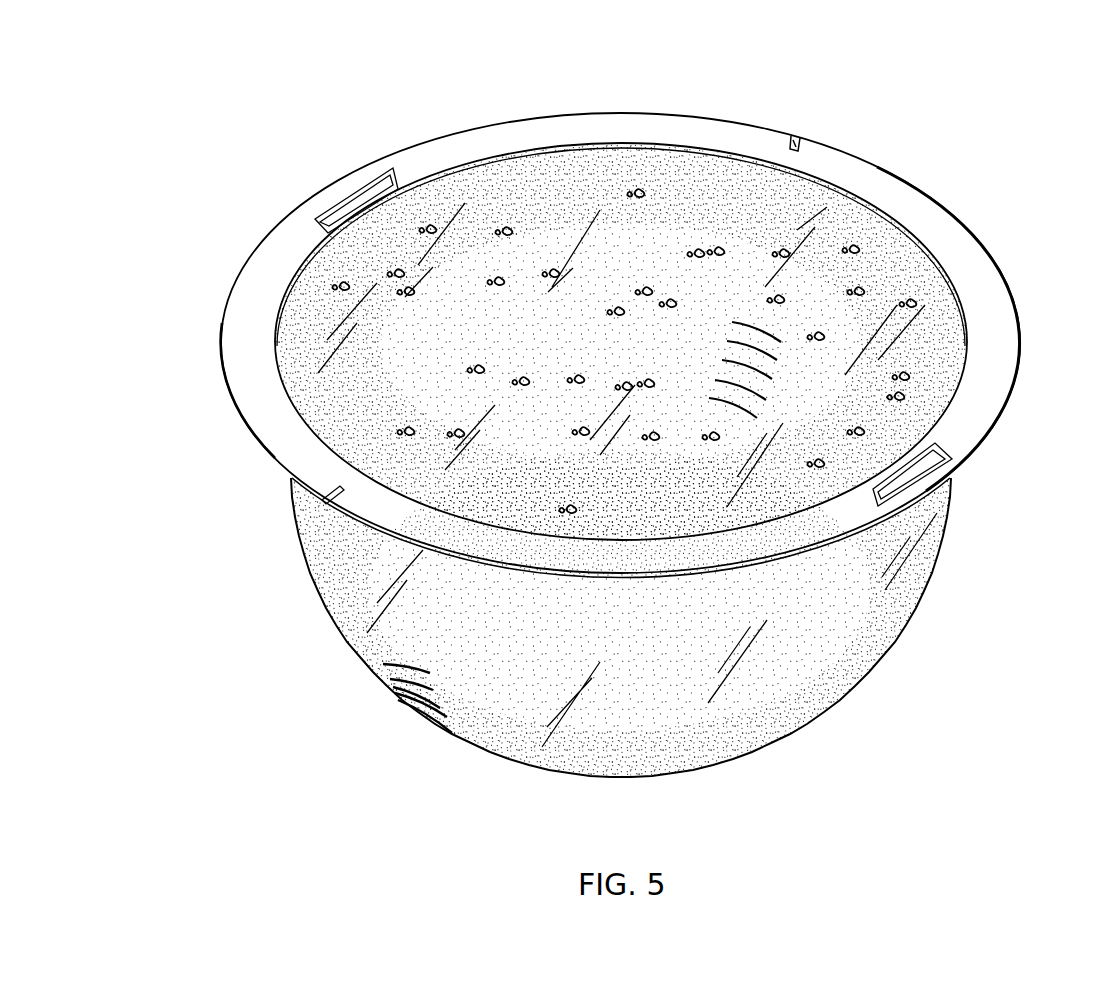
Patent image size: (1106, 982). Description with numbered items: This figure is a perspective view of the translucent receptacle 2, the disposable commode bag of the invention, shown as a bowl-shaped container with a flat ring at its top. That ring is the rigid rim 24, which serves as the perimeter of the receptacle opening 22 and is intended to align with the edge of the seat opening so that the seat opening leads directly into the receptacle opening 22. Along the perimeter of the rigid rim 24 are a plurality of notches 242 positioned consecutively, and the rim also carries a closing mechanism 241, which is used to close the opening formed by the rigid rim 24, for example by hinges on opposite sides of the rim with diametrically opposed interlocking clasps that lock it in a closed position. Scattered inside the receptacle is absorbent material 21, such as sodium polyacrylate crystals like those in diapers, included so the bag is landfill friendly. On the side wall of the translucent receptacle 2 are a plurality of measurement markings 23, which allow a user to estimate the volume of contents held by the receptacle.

The translucent receptacle 2 is at (170, 60).
The absorbent material 21 is at (430, 227).
The receptacle opening 22 is at (737, 68).
The measurement markings 23 is at (383, 642).
The rigid rim 24 is at (913, 207).
The closing mechanism 241 is at (347, 200).
The notches 242 is at (795, 140).